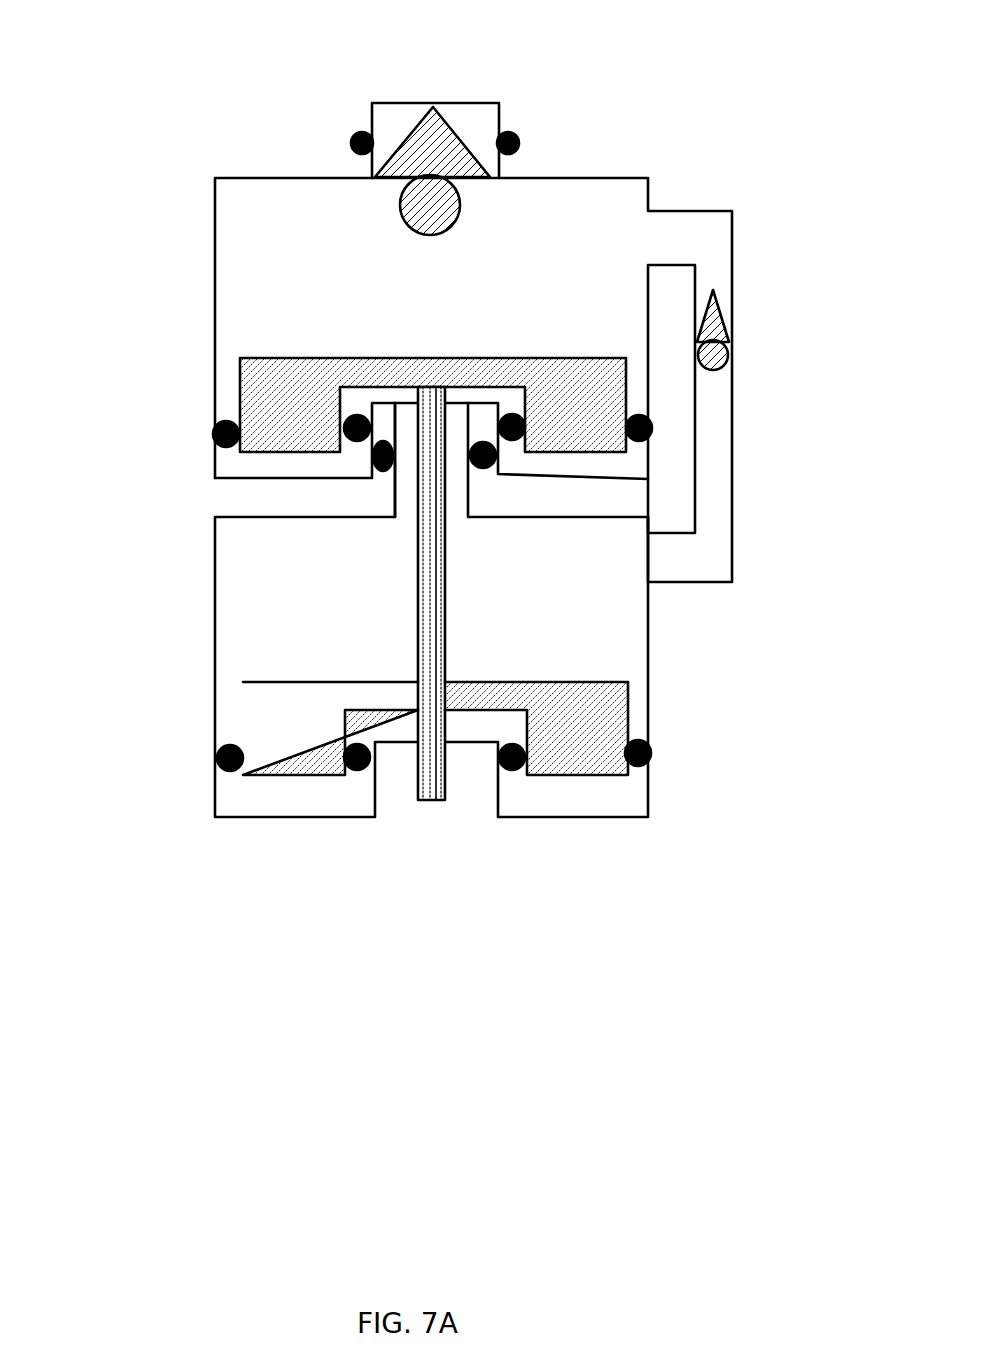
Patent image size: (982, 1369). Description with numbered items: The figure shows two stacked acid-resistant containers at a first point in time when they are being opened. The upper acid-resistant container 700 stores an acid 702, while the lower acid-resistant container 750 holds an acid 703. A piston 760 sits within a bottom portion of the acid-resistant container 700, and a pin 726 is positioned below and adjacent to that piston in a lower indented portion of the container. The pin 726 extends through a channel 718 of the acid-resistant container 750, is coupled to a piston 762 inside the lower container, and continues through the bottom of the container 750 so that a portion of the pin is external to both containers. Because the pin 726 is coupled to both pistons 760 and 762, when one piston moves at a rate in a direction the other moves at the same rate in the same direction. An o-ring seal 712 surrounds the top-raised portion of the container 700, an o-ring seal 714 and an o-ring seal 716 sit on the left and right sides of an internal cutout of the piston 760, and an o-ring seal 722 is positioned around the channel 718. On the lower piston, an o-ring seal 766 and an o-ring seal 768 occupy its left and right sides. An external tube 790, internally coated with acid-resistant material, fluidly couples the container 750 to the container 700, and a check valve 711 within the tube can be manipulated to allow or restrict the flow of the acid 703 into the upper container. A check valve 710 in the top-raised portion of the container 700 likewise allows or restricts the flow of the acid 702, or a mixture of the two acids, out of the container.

The acid-resistant container 700 is at (207, 243).
The acid 702 is at (430, 328).
The acid 703 is at (430, 667).
The check valve 710 is at (410, 128).
The check valve 711 is at (733, 317).
The o-ring seal 712 is at (355, 140).
The o-ring seal 714 is at (511, 420).
The o-ring seal 716 is at (214, 431).
The channel 718 is at (393, 487).
The o-ring seal 722 is at (482, 465).
The pin 726 is at (417, 535).
The acid-resistant container 750 is at (215, 636).
The piston 760 is at (297, 357).
The piston 762 is at (297, 678).
The o-ring seal 766 is at (218, 760).
The o-ring seal 768 is at (650, 748).
The external tube 790 is at (712, 442).